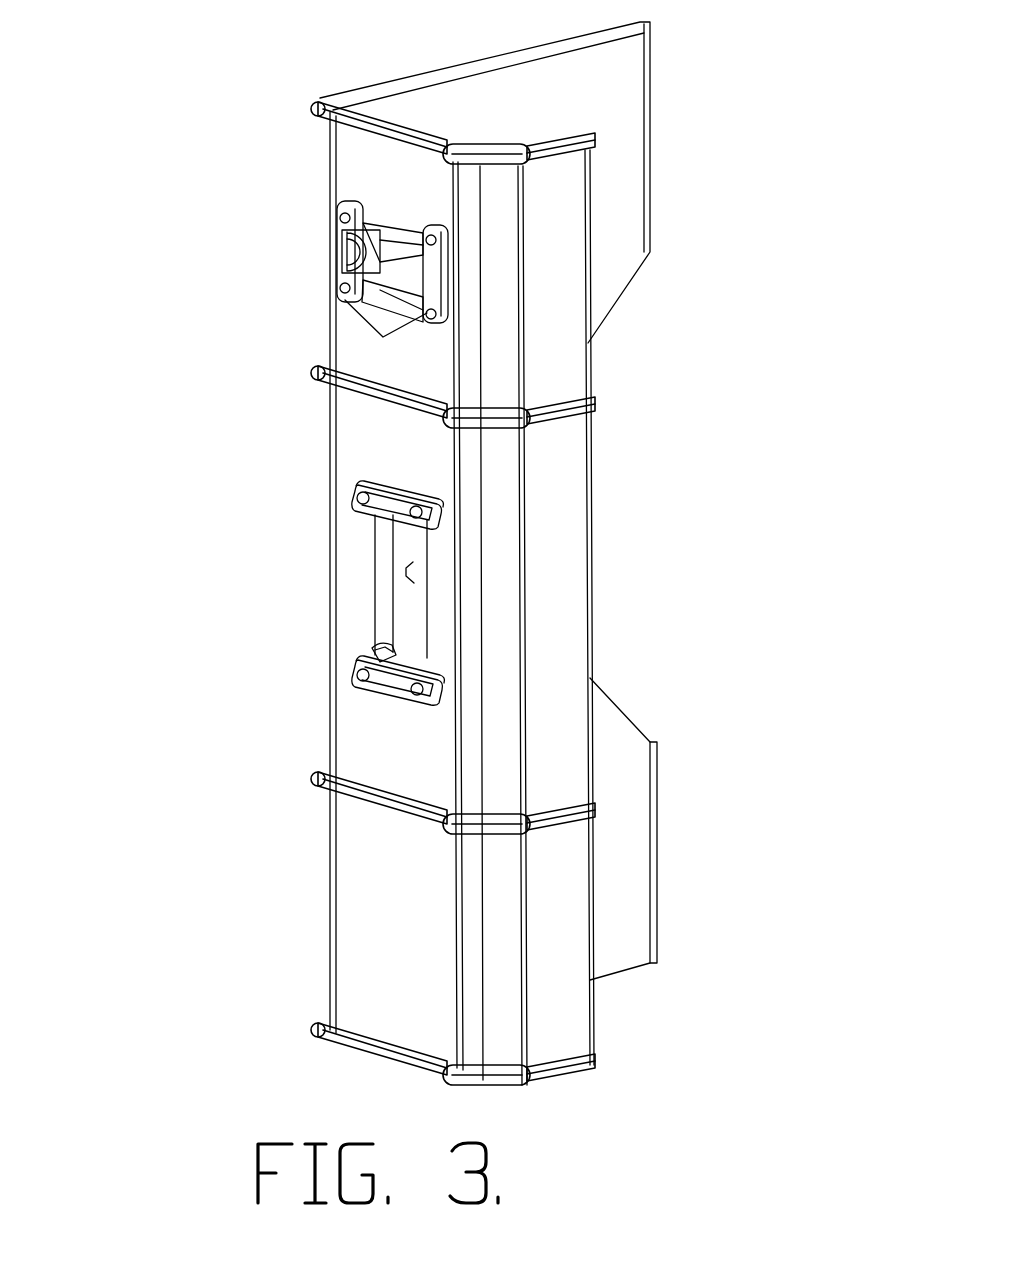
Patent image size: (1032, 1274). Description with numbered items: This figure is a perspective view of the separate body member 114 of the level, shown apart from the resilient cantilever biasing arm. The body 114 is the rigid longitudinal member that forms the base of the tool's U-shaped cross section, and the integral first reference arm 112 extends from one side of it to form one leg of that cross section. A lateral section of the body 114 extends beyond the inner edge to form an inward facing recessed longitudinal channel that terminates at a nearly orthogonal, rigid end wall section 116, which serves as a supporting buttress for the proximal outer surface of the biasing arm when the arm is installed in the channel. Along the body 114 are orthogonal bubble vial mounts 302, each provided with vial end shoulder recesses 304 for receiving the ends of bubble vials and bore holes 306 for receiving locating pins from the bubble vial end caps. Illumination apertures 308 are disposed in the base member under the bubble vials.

The first longitudinal supporting member 112 is at (583, 118).
The body 114 is at (432, 951).
The end wall section 116 is at (538, 598).
The bubble vial mounts 302 is at (383, 337).
The vial end shoulder recesses 304 is at (347, 250).
The bore holes 306 is at (428, 224).
The illumination apertures 308 is at (413, 576).